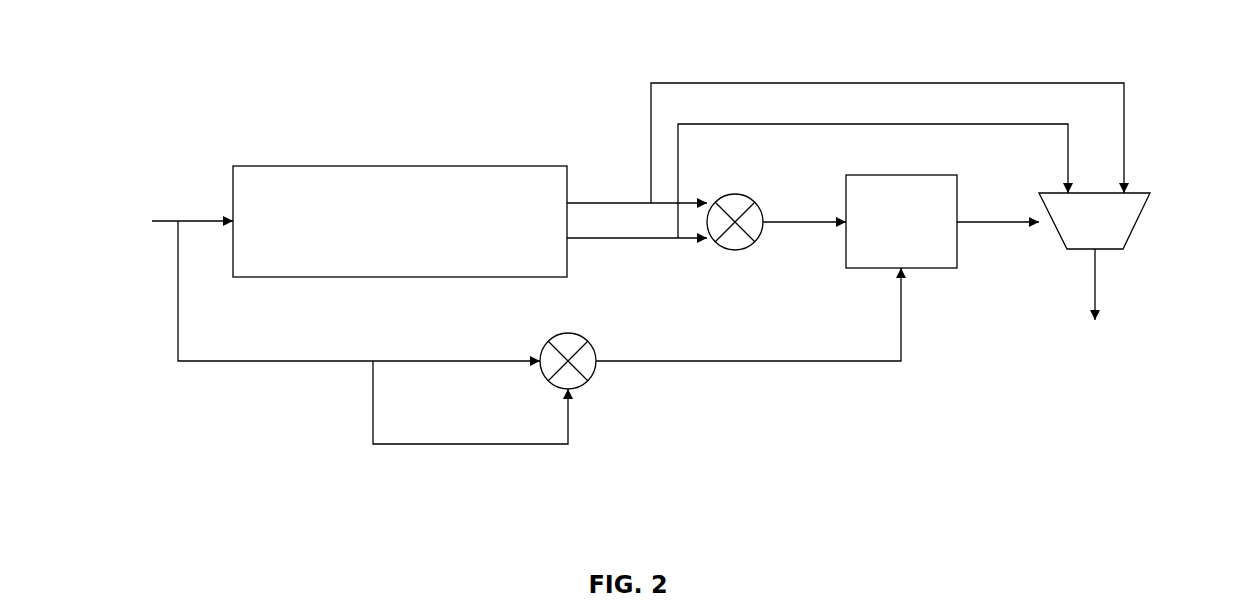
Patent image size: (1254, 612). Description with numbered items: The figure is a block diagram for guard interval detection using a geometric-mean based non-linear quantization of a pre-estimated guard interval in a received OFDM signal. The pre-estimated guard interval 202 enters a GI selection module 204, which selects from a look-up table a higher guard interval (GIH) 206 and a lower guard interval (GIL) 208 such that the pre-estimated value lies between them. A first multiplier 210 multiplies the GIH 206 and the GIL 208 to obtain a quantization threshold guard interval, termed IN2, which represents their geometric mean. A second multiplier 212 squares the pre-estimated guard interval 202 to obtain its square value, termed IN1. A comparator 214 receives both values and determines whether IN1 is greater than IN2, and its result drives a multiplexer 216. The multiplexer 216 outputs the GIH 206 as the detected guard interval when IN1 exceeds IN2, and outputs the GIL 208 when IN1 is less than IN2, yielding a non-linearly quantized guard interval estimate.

The pre-estimated guard interval 202 is at (170, 220).
The guard interval selection module 204 is at (415, 165).
The higher guard interval 206 is at (616, 165).
The lower guard interval 208 is at (621, 270).
The first multiplier 210 is at (735, 250).
The second multiplier 212 is at (590, 373).
The comparator 214 is at (910, 175).
The multiplexer 216 is at (1140, 218).